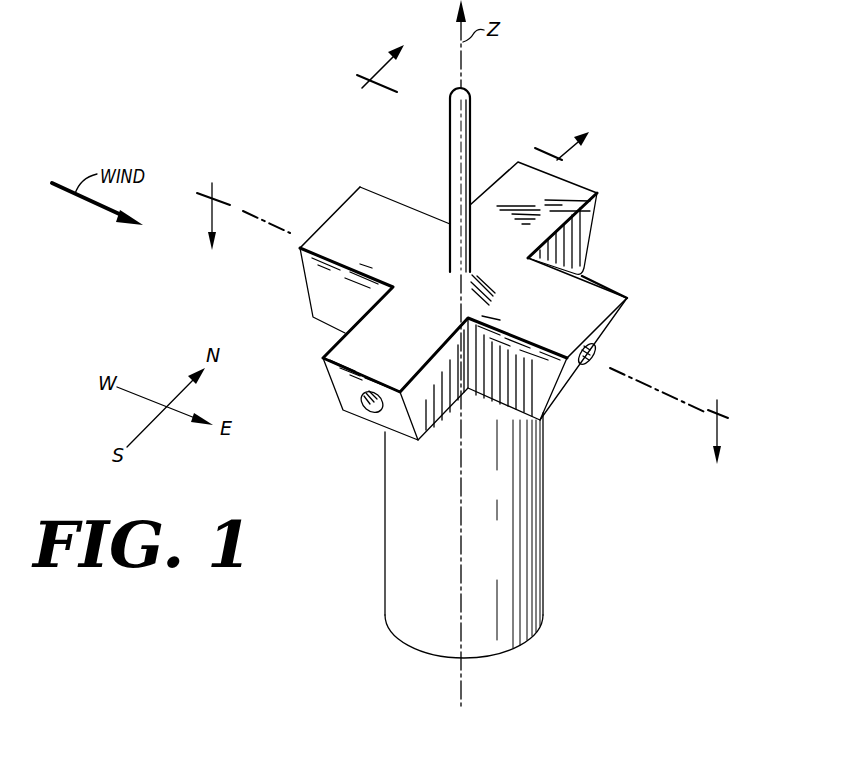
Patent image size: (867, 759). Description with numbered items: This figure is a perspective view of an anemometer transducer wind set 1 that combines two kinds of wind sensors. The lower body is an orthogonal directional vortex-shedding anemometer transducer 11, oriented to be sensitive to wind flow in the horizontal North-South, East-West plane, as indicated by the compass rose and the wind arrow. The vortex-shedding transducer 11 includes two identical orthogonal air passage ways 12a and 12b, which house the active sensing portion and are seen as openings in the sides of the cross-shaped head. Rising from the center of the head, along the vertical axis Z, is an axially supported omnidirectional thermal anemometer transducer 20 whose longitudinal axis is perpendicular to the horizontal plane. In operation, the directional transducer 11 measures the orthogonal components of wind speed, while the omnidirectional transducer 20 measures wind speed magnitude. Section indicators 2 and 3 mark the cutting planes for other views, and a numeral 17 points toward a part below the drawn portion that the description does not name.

The anemometer transducer wind set 1 is at (603, 225).
The vortex-shedding anemometer transducer 11 is at (632, 322).
The air passage way 12a is at (368, 411).
The air passage way 12b is at (595, 352).
The omnidirectional thermal anemometer transducer 20 is at (474, 97).
The support 17 is at (174, 758).
The section line 2- 2 is at (465, 333).
The section line 3- 3 is at (477, 92).